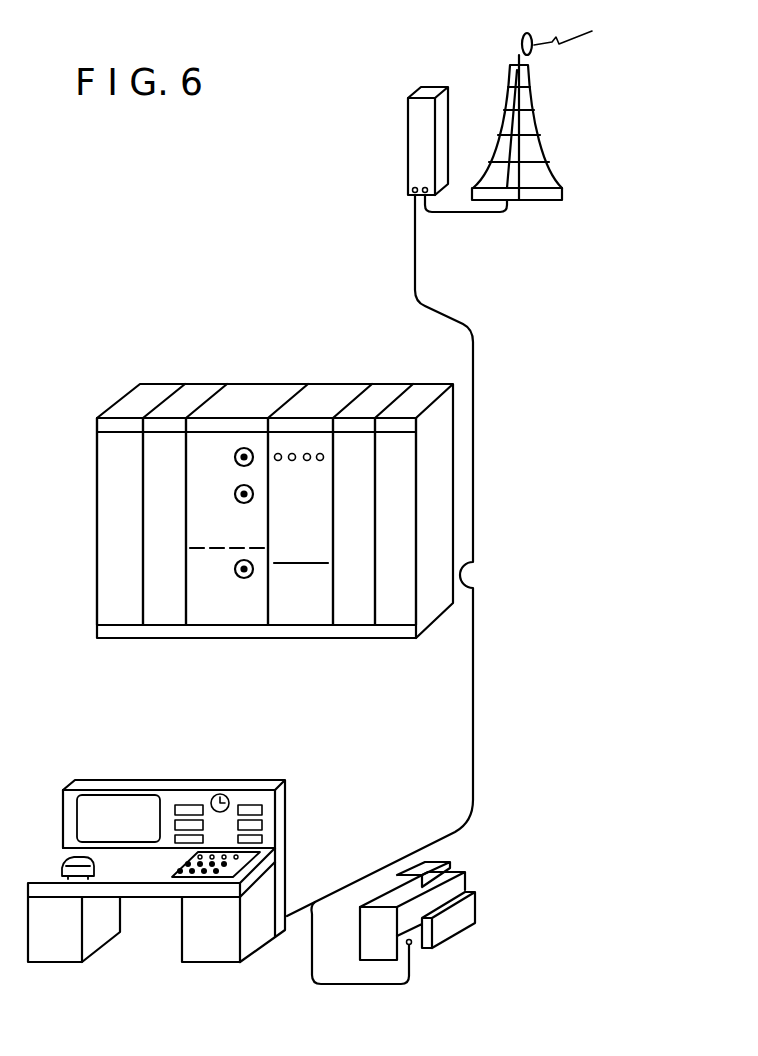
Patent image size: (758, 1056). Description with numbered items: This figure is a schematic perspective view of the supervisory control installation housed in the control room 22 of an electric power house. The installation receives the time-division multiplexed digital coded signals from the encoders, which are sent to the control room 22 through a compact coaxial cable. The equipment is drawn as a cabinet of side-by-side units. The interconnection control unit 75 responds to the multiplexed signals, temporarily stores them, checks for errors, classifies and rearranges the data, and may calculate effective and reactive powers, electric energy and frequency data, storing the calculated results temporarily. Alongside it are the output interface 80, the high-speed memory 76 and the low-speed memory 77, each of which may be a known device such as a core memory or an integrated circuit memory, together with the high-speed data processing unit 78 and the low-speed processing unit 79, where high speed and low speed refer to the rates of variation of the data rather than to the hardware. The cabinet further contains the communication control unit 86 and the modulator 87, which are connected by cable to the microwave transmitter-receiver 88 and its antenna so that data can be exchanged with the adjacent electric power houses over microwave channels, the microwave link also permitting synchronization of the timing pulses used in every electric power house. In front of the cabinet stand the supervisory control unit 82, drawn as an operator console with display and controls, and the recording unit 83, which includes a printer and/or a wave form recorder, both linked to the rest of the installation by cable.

The control room 22 is at (539, 556).
The interconnection control unit 75 is at (134, 499).
The high-speed memory 76 is at (224, 499).
The low-speed memory 77 is at (224, 591).
The high-speed data processing unit 78 is at (316, 499).
The low-speed processing unit 79 is at (302, 597).
The output interface 80 is at (179, 499).
The supervisory control unit 82 is at (153, 781).
The recording unit 83 is at (480, 897).
The communication control unit 86 is at (369, 499).
The modulator 87 is at (409, 499).
The microwave transmitter-receiver 88 is at (408, 98).